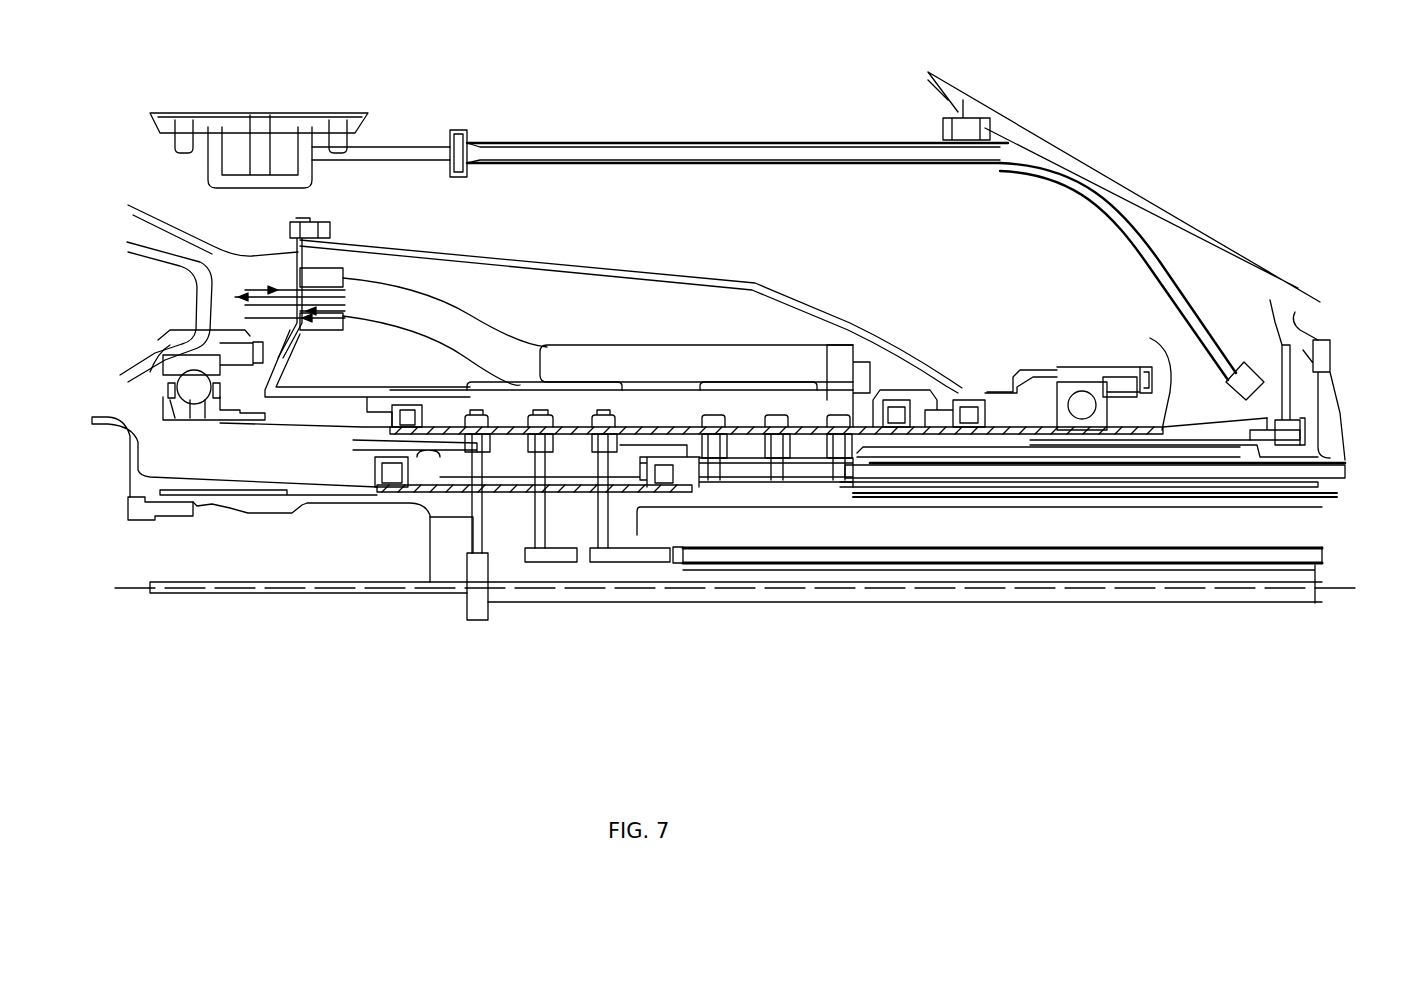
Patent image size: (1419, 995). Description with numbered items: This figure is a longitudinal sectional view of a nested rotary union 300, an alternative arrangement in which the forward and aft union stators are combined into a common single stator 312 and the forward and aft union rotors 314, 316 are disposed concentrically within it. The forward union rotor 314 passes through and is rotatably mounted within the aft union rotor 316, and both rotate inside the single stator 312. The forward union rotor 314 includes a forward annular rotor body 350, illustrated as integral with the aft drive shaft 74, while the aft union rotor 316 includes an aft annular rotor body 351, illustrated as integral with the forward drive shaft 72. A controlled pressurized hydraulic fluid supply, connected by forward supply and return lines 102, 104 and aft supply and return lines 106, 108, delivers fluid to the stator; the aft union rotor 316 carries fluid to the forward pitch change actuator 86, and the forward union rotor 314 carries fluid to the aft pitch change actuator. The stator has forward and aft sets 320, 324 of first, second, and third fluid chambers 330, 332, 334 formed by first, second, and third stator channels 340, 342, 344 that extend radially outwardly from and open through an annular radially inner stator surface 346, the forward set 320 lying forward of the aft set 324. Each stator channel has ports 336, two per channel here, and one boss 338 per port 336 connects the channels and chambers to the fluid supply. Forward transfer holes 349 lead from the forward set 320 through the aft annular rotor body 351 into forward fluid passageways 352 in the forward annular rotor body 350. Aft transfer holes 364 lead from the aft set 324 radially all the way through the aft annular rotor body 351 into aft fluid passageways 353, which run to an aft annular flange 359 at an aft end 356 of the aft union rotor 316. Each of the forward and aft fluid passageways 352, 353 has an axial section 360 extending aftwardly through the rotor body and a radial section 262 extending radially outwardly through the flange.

The forward pitch change actuator 86 is at (300, 183).
The forward supply line 102 is at (310, 236).
The forward return line 104 is at (330, 283).
The aft supply line 106 is at (332, 304).
The aft return line 108 is at (326, 322).
The single stator 312 is at (383, 388).
The forward set of fluid chambers 320 is at (545, 350).
The aft set of fluid chambers 324 is at (788, 384).
The boss 338 is at (848, 345).
The port 336 is at (878, 370).
The third fluid chamber 334 is at (868, 410).
The first stator channel 340 is at (463, 412).
The second stator channel 342 is at (528, 412).
The third stator channel 344 is at (590, 412).
The first fluid chamber 330 is at (480, 460).
The second fluid chamber 332 is at (543, 460).
The aft transfer holes 364 is at (745, 445).
The annular radially inner stator surface 346 is at (385, 446).
The forward transfer holes 349 is at (440, 496).
The forward drive shaft 72 is at (296, 432).
The aft drive shaft 74 is at (228, 514).
The forward union rotor 314 is at (430, 560).
The forward fluid passageways 352 is at (478, 578).
The axial section 360 is at (733, 575).
The aft fluid passageways 353 is at (855, 486).
The forward annular rotor body 350 is at (1128, 498).
The aft annular rotor body 351 is at (1030, 440).
The aft union rotor 316 is at (1165, 345).
The aft end of aft union rotor 356 is at (1265, 420).
The aft annular flange 359 is at (1305, 312).
The radial section 262 is at (1330, 340).
The nested rotary union 300 is at (870, 632).